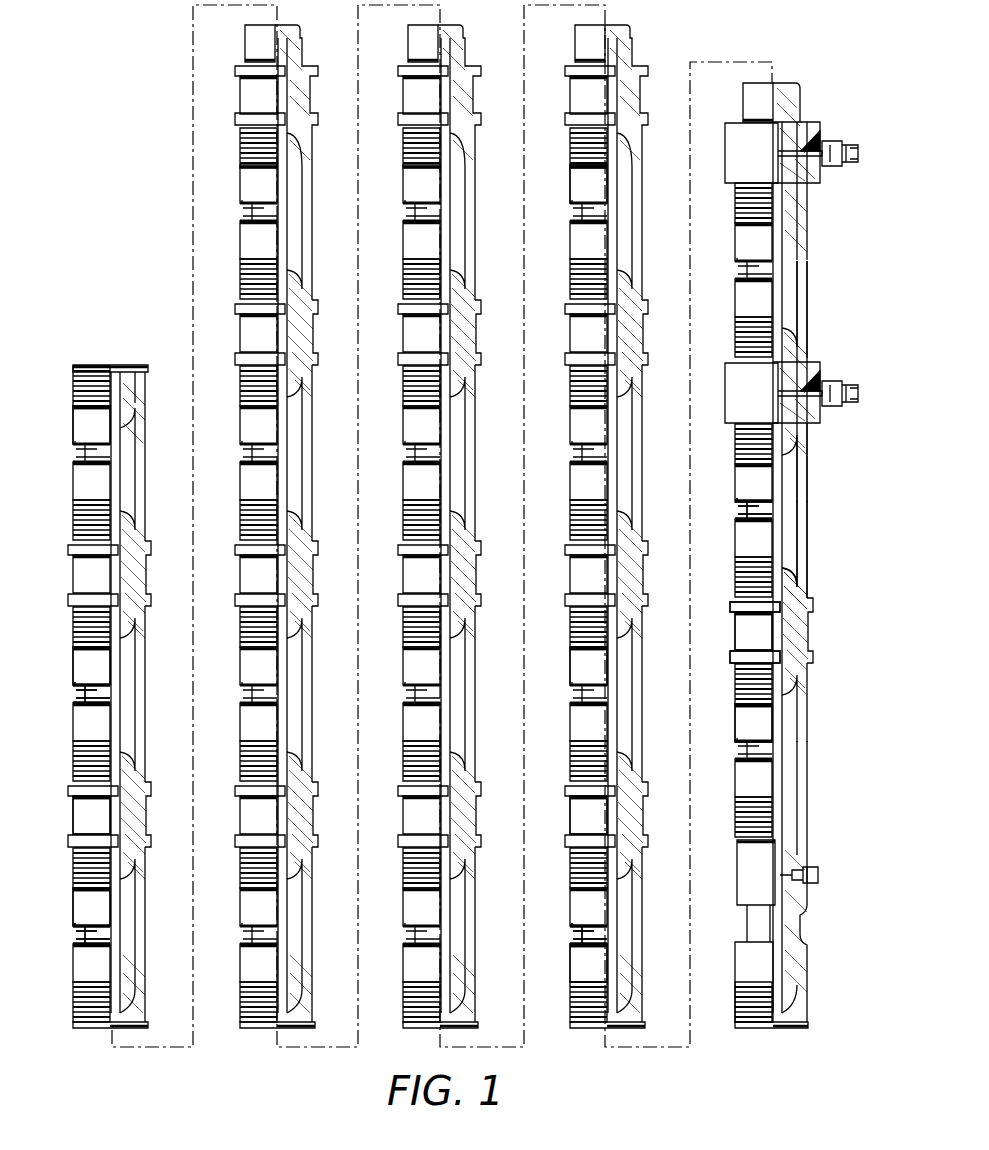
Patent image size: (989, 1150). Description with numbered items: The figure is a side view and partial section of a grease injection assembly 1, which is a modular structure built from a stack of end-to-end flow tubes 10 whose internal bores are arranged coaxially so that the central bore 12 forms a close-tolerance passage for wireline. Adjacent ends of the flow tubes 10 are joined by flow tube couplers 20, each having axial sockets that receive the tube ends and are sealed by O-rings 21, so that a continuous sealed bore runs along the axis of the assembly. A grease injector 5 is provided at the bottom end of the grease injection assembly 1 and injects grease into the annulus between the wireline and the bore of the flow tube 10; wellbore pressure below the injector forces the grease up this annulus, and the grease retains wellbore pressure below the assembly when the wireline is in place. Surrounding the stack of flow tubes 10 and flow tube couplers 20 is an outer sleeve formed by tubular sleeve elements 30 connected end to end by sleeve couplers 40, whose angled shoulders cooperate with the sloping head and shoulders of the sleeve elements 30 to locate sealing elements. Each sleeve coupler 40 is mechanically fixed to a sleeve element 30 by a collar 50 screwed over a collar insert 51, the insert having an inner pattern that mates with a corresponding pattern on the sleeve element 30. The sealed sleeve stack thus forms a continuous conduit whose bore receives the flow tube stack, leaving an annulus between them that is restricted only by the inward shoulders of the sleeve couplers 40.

The grease injection assembly 1 is at (118, 30).
The grease injector 5 is at (740, 130).
The flow tube 10 is at (788, 482).
The central bore 12 is at (612, 182).
The flow tube coupler 20 is at (110, 583).
The O-ring 21 is at (795, 612).
The sleeve element 30 is at (127, 676).
The sleeve coupler 40 is at (140, 573).
The collar 50 is at (82, 432).
The collar insert 51 is at (85, 938).